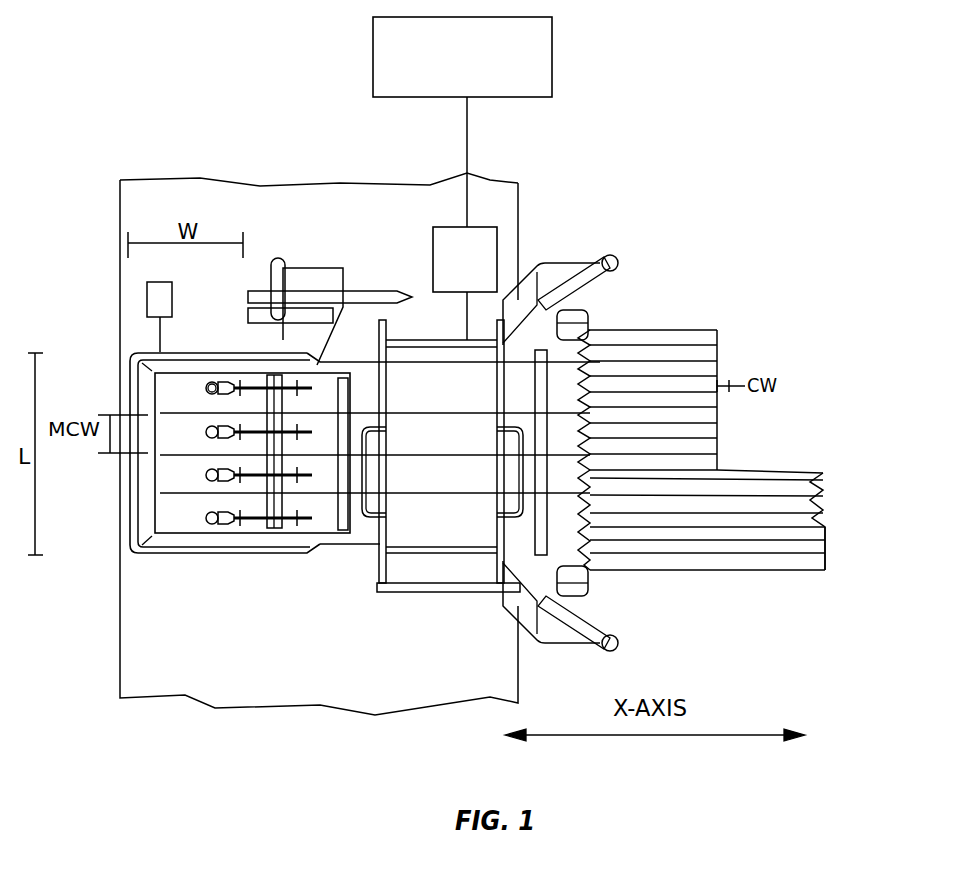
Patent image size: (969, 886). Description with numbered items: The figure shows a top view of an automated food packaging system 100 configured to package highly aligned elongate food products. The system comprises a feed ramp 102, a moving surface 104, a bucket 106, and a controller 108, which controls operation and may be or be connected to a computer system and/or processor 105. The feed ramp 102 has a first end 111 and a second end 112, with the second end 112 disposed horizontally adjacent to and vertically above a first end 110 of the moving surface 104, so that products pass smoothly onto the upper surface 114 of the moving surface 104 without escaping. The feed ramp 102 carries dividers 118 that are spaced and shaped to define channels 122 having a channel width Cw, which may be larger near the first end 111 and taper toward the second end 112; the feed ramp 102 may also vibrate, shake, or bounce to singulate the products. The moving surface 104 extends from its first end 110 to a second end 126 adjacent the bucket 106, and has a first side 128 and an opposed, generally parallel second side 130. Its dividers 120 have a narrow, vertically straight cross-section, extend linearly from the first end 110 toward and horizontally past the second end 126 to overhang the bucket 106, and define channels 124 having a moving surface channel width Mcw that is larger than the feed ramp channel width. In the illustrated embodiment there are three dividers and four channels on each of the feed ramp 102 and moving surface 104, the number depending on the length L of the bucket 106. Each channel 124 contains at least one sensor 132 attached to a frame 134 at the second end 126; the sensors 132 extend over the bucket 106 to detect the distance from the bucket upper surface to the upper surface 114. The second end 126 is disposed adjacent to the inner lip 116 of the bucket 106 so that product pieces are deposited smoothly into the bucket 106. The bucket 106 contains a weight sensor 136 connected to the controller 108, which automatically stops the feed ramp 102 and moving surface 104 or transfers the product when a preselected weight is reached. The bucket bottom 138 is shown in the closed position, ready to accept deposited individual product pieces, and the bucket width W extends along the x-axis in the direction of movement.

The automated food packaging system 100 is at (180, 99).
The feed ramp 102 is at (728, 564).
The moving surface 104 is at (448, 495).
The computer system and/or processor 105 is at (553, 62).
The bucket 106 is at (173, 525).
The controller 108 is at (475, 255).
The first end of moving surface 110 is at (580, 470).
The first end of feed ramp 111 is at (797, 483).
The second end of feed ramp 112 is at (582, 527).
The upper surface of moving surface 114 is at (397, 400).
The inner lip of bucket 116 is at (265, 505).
The dividers of feed ramp 118 is at (748, 497).
The dividers of moving surface 120 is at (505, 570).
The channels of feed ramp 122 is at (627, 387).
The channels of moving surface 124 is at (510, 390).
The second end of moving surface 126 is at (320, 335).
The first side of moving surface 128 is at (410, 527).
The second side of moving surface 130 is at (365, 363).
The sensors 132 is at (213, 383).
The frame 134 is at (285, 400).
The weight sensor 136 is at (155, 307).
The bucket bottom 138 is at (163, 402).